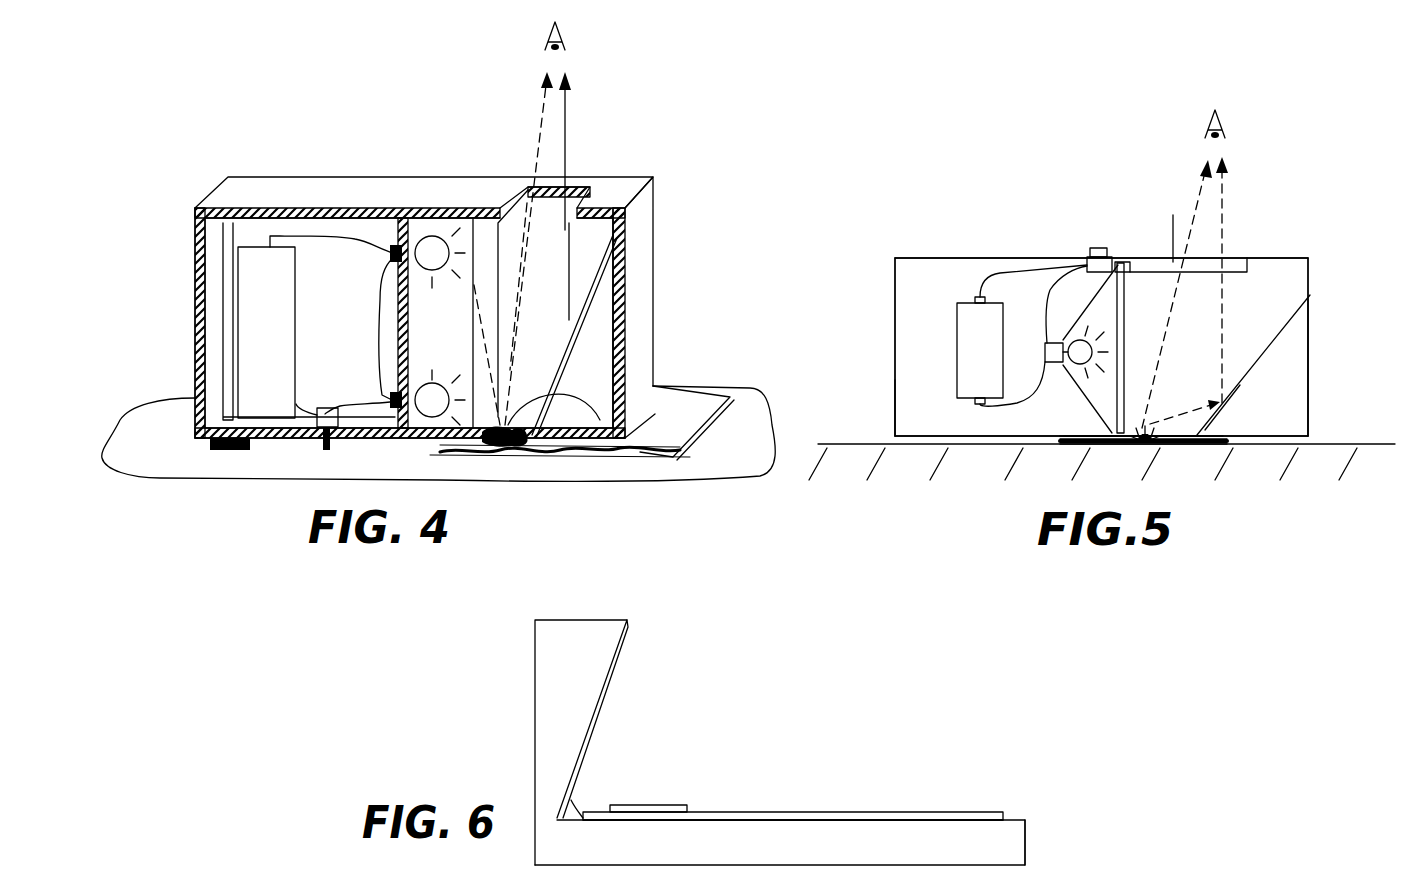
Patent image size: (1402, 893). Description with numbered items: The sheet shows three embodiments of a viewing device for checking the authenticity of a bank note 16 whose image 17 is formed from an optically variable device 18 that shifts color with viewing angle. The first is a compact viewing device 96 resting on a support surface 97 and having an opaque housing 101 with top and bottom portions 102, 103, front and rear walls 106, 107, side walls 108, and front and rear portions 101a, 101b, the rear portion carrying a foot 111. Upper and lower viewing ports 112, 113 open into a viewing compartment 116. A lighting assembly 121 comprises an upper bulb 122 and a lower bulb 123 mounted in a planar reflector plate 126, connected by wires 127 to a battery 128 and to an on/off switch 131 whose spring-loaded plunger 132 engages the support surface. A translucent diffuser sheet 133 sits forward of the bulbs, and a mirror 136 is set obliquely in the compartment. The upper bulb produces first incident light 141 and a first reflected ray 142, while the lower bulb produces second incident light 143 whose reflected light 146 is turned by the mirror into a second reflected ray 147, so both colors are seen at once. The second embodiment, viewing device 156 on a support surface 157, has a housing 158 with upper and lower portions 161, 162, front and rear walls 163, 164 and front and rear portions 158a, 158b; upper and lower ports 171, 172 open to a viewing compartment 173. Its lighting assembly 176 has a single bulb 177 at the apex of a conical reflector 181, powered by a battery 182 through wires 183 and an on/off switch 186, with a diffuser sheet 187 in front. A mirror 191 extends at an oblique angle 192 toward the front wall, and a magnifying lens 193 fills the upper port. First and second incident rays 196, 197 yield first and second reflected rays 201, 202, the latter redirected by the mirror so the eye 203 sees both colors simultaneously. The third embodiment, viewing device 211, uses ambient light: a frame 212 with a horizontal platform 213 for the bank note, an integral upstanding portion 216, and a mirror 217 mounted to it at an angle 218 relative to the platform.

In FIG. 4, the bank note 16 is at (683, 400).
In FIG. 5, the bank note 16 is at (1215, 455).
In FIG. 6, the bank note 16 is at (890, 812).
In FIG. 4, the image 17 is at (498, 447).
In FIG. 5, the image 17 is at (1115, 446).
In FIG. 6, the image 17 is at (640, 805).
In FIG. 4, the optically variable device 18 is at (436, 468).
In FIG. 5, the optically variable device 18 is at (1148, 446).
In FIG. 6, the optically variable device 18 is at (700, 811).
In FIG. 4, the viewing device 96 is at (271, 152).
In FIG. 4, the support surface 97 is at (146, 464).
In FIG. 4, the housing 101 is at (655, 266).
In FIG. 4, the front portion 101a is at (653, 178).
In FIG. 4, the rear portion 101b is at (194, 226).
In FIG. 4, the top portion 102 is at (445, 208).
In FIG. 4, the bottom portion 103 is at (336, 432).
In FIG. 4, the front wall 106 is at (620, 343).
In FIG. 4, the rear wall 107 is at (194, 349).
In FIG. 4, the side walls 108 is at (340, 228).
In FIG. 4, the foot 111 is at (240, 452).
In FIG. 4, the upper viewing port 112 is at (583, 197).
In FIG. 4, the lower viewing port 113 is at (517, 462).
In FIG. 4, the viewing compartment 116 is at (600, 242).
In FIG. 4, the lighting assembly 121 is at (612, 206).
In FIG. 4, the upper bulb 122 is at (431, 323).
In FIG. 4, the lower bulb 123 is at (436, 376).
In FIG. 4, the reflector plate 126 is at (380, 311).
In FIG. 4, the wires 127 is at (395, 256).
In FIG. 4, the battery 128 is at (248, 339).
In FIG. 4, the on/off switch 131 is at (306, 438).
In FIG. 4, the spring-loaded plunger 132 is at (318, 452).
In FIG. 4, the diffuser sheet 133 is at (490, 214).
In FIG. 4, the mirror 136 is at (612, 453).
In FIG. 4, the first incident light 141 is at (508, 241).
In FIG. 4, the first reflected ray 142 is at (520, 304).
In FIG. 4, the second incident light 143 is at (507, 390).
In FIG. 4, the reflected light 146 is at (566, 447).
In FIG. 4, the second reflected ray 147 is at (620, 285).
In FIG. 5, the viewing device 156 is at (996, 238).
In FIG. 5, the support surface 157 is at (1342, 444).
In FIG. 5, the housing 158 is at (1268, 260).
In FIG. 5, the front portion 158a is at (1308, 290).
In FIG. 5, the rear portion 158b is at (895, 365).
In FIG. 5, the upper portion 161 is at (1027, 258).
In FIG. 5, the lower portion 162 is at (995, 437).
In FIG. 5, the front wall 163 is at (1308, 373).
In FIG. 5, the rear wall 164 is at (895, 418).
In FIG. 5, the upper port 171 is at (1238, 260).
In FIG. 5, the lower port 172 is at (1187, 422).
In FIG. 5, the viewing compartment 173 is at (1270, 305).
In FIG. 5, the lighting assembly 176 is at (1172, 223).
In FIG. 5, the bulb 177 is at (1090, 258).
In FIG. 5, the conical reflector 181 is at (1093, 410).
In FIG. 5, the battery 182 is at (963, 367).
In FIG. 5, the wires 183 is at (975, 297).
In FIG. 5, the on/off switch 186 is at (1100, 248).
In FIG. 5, the diffuser sheet 187 is at (1167, 283).
In FIG. 5, the mirror 191 is at (1246, 388).
In FIG. 5, the oblique angle 192 is at (1170, 447).
In FIG. 5, the magnifying lens 193 is at (1122, 262).
In FIG. 5, the first incident ray 196 is at (1132, 374).
In FIG. 5, the second incident ray 197 is at (1068, 440).
In FIG. 5, the first reflected ray 201 is at (1172, 326).
In FIG. 5, the second reflected ray 202 is at (1187, 422).
In FIG. 5, the eye 203 is at (1228, 135).
In FIG. 6, the viewing device 211 is at (514, 642).
In FIG. 6, the frame 212 is at (1025, 848).
In FIG. 6, the platform 213 is at (1015, 828).
In FIG. 6, the upstanding portion 216 is at (553, 688).
In FIG. 6, the mirror 217 is at (612, 680).
In FIG. 6, the angle 218 is at (583, 805).